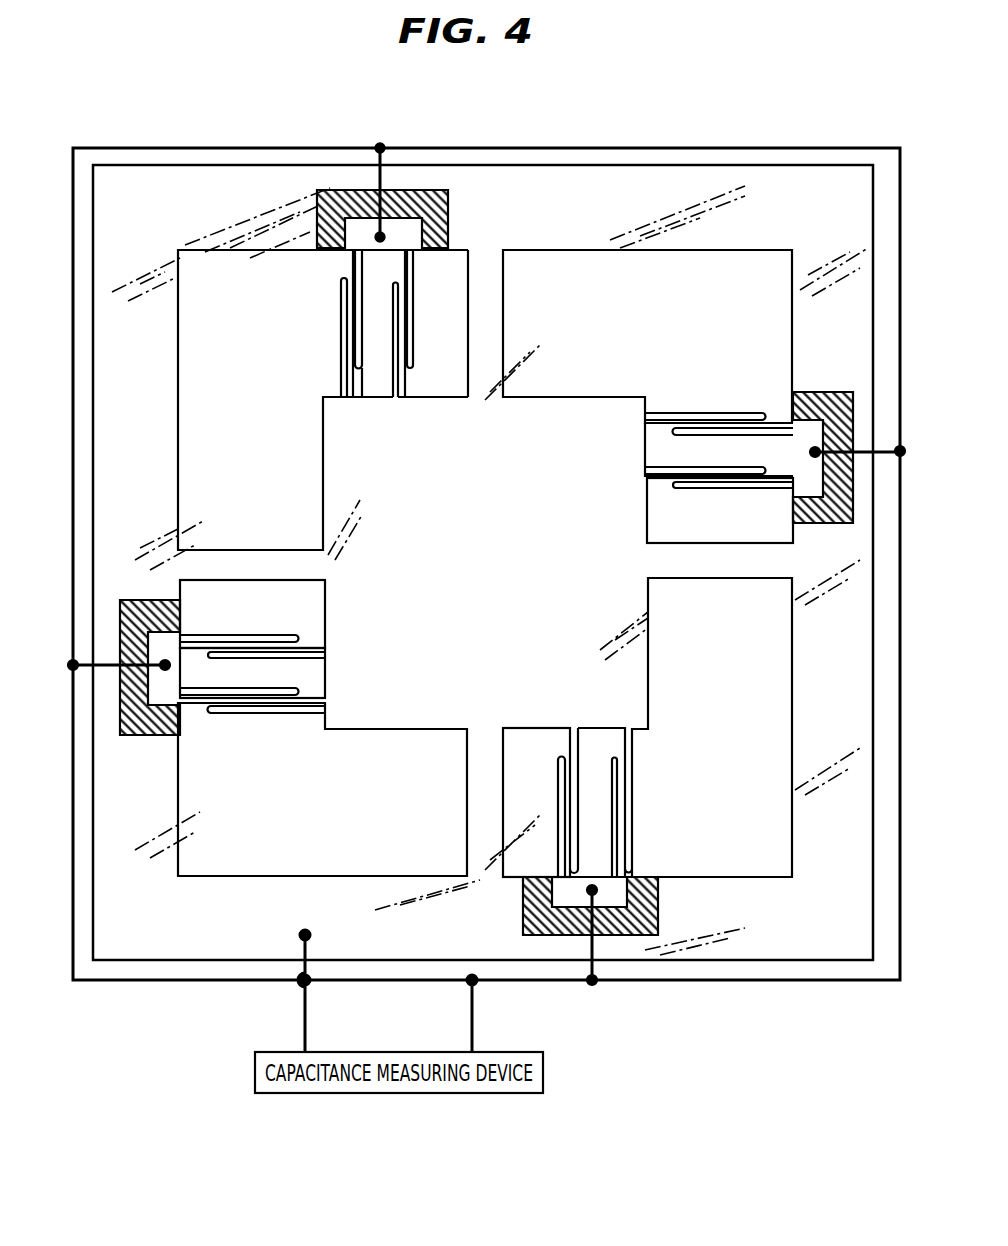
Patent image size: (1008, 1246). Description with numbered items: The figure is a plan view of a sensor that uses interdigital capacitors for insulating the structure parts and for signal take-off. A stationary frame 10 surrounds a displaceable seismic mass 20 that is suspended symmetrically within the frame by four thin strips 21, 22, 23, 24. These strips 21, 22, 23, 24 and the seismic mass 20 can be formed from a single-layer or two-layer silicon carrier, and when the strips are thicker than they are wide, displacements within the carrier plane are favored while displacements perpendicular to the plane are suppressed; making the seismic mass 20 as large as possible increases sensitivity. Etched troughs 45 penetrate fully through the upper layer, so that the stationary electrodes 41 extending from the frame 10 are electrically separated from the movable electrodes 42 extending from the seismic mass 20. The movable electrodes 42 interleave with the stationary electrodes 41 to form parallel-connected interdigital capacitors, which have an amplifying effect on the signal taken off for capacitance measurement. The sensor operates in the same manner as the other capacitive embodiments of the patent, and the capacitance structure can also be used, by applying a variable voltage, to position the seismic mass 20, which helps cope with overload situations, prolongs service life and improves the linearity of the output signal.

The stationary frame 10 is at (760, 945).
The seismic mass 20 is at (491, 584).
The strip 21 is at (490, 330).
The strip 22 is at (699, 563).
The strip 23 is at (490, 790).
The strip 24 is at (263, 562).
The stationary electrodes 41 is at (357, 370).
The movable electrodes 42 is at (347, 312).
The etched troughs 45 is at (340, 190).